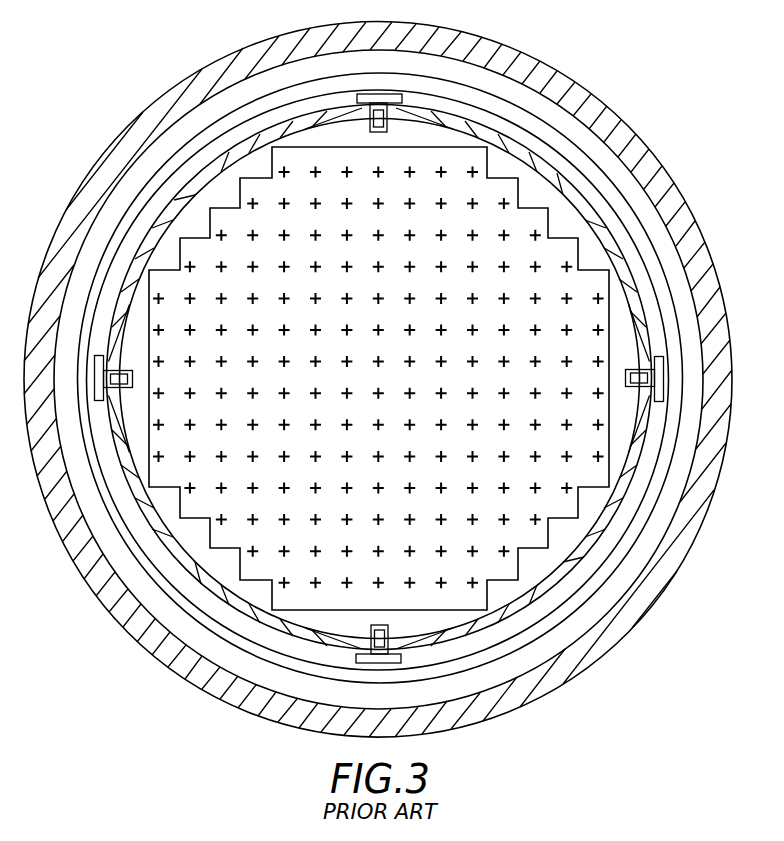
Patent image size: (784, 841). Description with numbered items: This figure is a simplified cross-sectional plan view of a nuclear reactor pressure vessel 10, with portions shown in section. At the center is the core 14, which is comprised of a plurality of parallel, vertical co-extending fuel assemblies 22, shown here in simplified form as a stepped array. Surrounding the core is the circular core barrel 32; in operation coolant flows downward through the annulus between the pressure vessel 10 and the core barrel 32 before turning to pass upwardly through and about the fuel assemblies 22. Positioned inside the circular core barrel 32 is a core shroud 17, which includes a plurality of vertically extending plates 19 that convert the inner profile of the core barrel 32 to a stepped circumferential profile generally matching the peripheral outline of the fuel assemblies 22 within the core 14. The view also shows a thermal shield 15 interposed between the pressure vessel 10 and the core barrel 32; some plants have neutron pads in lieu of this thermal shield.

The pressure vessel 10 is at (163, 100).
The core 14 is at (377, 360).
The thermal shield 15 is at (153, 175).
The core shroud 17 is at (530, 192).
The vertically extending plates 19 is at (185, 224).
The fuel assemblies 22 is at (450, 592).
The core barrel 32 is at (168, 548).